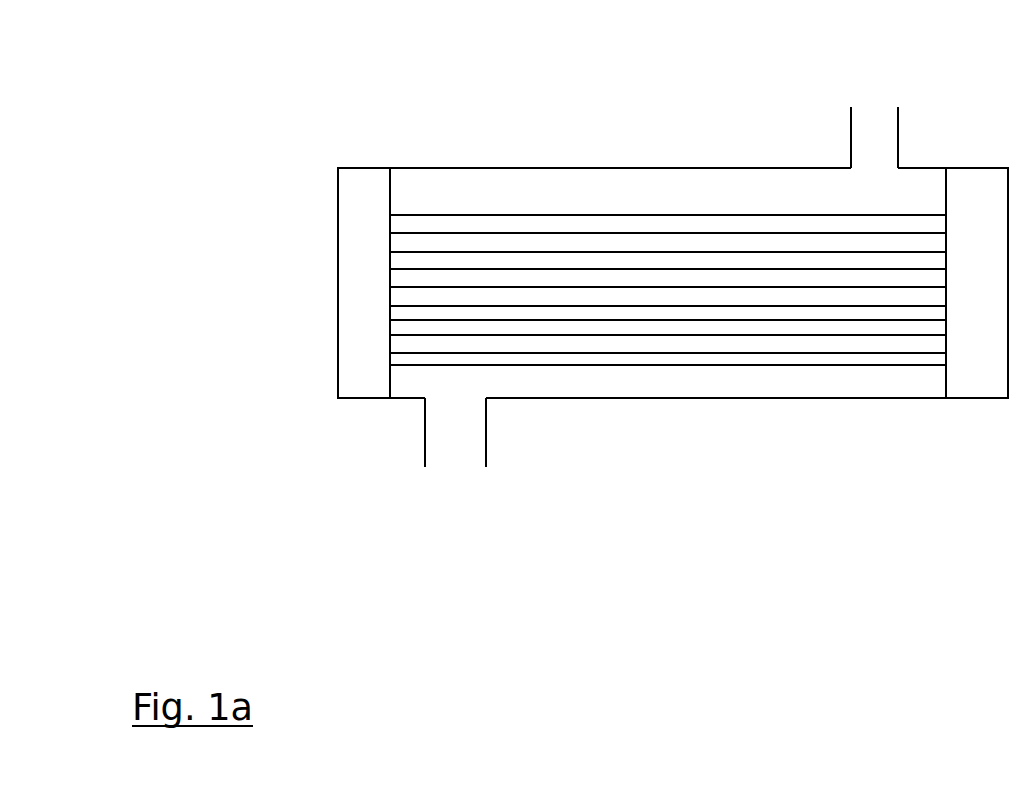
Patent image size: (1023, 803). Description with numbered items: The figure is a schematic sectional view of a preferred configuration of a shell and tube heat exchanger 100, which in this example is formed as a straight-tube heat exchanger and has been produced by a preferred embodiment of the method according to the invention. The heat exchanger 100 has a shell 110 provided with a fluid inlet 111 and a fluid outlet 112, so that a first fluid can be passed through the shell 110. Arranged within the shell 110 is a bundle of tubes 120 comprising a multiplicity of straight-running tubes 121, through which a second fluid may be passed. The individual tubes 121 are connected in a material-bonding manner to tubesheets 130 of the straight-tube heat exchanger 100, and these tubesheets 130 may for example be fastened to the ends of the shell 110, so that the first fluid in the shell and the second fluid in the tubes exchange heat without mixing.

The shell and tube heat exchanger 100 is at (748, 98).
The shell 110 is at (422, 167).
The fluid inlet 111 is at (880, 108).
The fluid outlet 112 is at (467, 447).
The bundle of tubes 120 is at (480, 203).
The straight-running tubes 121 is at (592, 298).
The tubesheets 130 is at (360, 383).